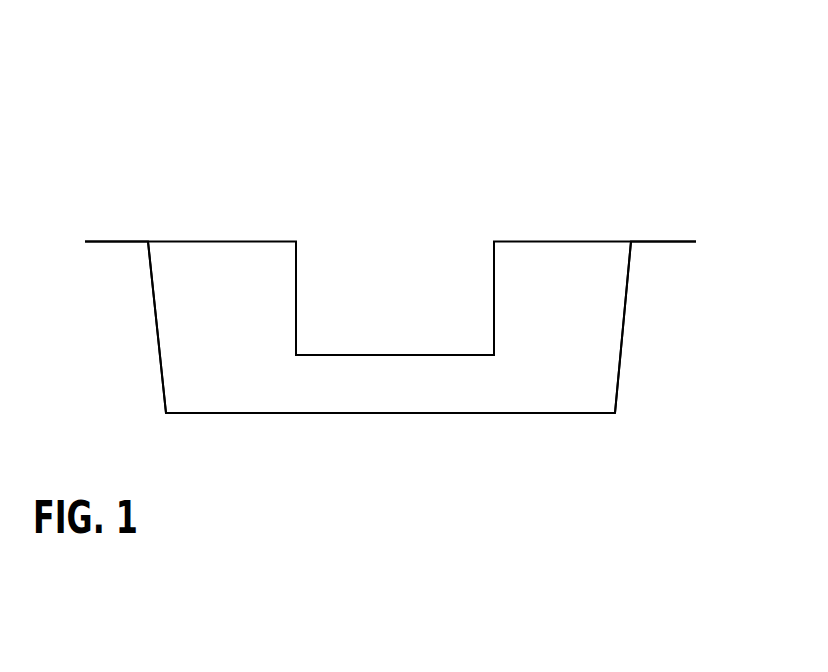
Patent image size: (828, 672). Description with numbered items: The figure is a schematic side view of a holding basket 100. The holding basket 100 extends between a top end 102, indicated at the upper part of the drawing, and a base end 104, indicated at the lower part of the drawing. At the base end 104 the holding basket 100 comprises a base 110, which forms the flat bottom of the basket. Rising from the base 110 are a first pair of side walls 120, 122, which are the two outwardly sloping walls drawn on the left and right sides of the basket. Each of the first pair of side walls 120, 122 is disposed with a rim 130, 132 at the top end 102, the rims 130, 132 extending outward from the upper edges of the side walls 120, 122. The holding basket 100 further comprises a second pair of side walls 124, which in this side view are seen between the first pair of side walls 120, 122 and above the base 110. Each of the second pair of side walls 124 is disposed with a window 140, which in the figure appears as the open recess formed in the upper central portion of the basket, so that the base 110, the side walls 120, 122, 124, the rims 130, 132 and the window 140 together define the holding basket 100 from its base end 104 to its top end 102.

The holding basket 100 is at (205, 137).
The top end 102 is at (616, 89).
The base end 104 is at (616, 547).
The base 110 is at (307, 413).
The first pair of side walls 120 is at (622, 366).
The first pair of side walls 122 is at (160, 367).
The second pair of side walls 124 is at (550, 376).
The rim 130 is at (103, 239).
The rim 132 is at (665, 238).
The window 140 is at (387, 298).